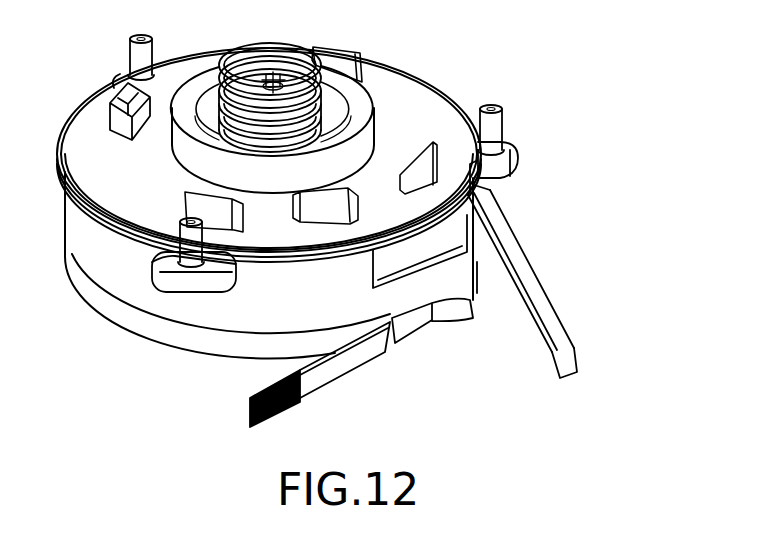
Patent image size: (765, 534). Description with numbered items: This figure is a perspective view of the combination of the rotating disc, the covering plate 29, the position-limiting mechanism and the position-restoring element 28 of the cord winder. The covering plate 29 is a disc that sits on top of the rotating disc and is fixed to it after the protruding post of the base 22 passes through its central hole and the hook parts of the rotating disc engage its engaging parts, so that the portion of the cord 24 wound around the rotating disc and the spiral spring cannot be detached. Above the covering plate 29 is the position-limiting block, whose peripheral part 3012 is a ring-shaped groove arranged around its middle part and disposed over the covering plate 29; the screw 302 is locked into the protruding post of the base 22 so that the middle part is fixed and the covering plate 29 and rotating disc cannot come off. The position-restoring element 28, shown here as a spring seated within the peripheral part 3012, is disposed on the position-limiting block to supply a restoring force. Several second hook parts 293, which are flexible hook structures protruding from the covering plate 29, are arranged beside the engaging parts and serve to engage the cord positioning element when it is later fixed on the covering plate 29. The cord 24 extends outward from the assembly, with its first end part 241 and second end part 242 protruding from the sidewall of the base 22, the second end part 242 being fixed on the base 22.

The base 22 is at (163, 350).
The cord 24 is at (420, 262).
The first end part 241 is at (562, 335).
The second end part 242 is at (313, 380).
The position-restoring element 28 is at (283, 44).
The covering plate 29 is at (437, 112).
The second hook part 293 is at (122, 76).
The screw 302 is at (257, 80).
The peripheral part 3012 is at (337, 120).